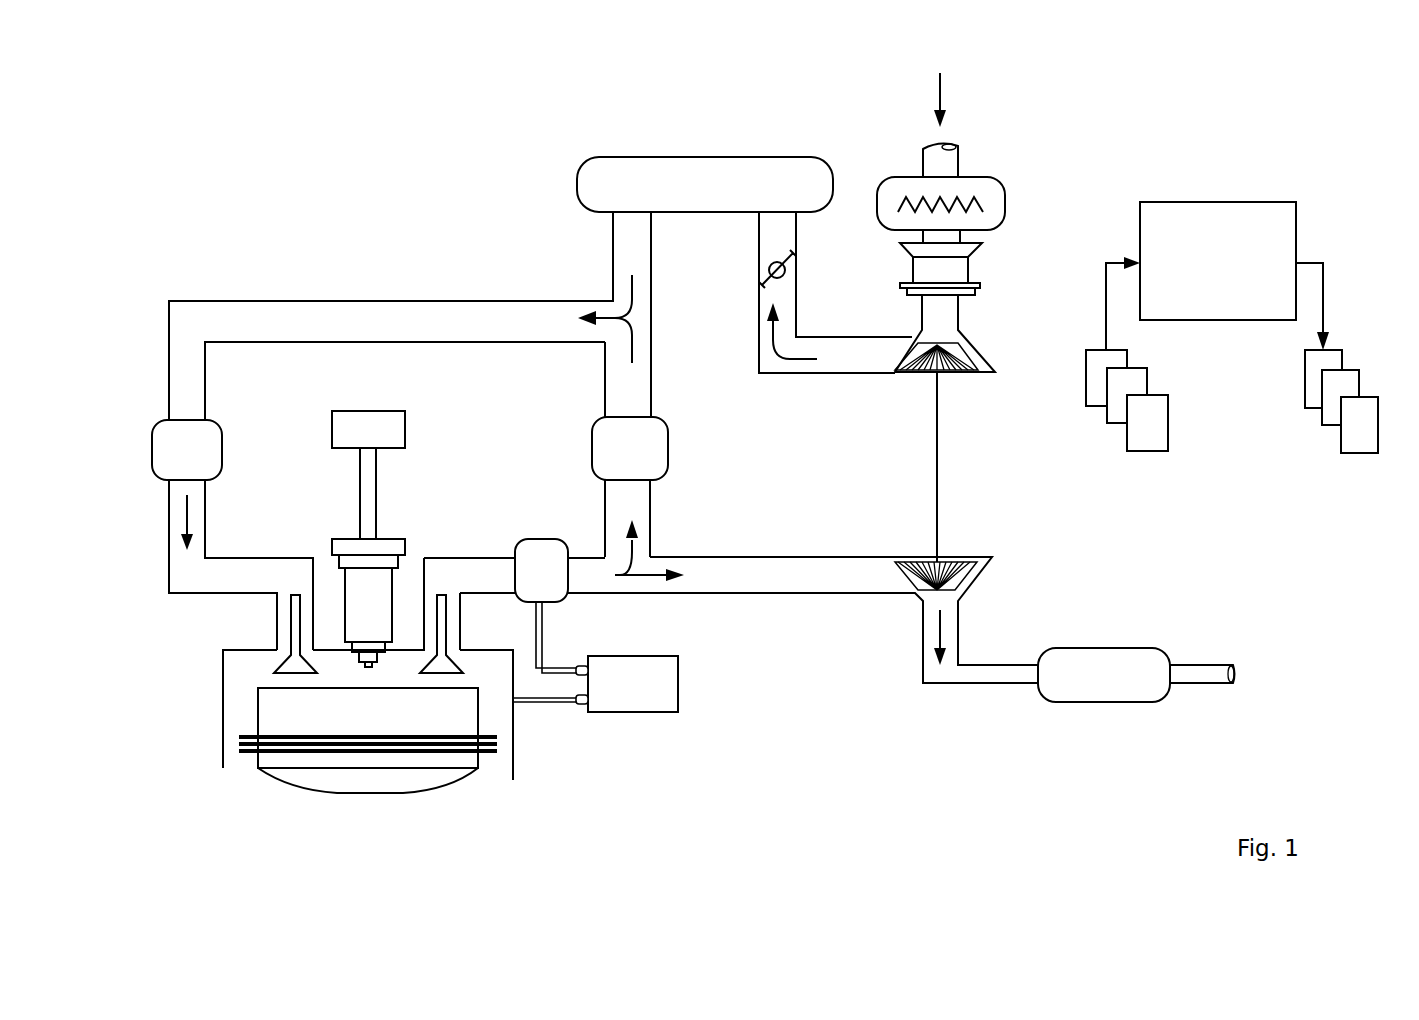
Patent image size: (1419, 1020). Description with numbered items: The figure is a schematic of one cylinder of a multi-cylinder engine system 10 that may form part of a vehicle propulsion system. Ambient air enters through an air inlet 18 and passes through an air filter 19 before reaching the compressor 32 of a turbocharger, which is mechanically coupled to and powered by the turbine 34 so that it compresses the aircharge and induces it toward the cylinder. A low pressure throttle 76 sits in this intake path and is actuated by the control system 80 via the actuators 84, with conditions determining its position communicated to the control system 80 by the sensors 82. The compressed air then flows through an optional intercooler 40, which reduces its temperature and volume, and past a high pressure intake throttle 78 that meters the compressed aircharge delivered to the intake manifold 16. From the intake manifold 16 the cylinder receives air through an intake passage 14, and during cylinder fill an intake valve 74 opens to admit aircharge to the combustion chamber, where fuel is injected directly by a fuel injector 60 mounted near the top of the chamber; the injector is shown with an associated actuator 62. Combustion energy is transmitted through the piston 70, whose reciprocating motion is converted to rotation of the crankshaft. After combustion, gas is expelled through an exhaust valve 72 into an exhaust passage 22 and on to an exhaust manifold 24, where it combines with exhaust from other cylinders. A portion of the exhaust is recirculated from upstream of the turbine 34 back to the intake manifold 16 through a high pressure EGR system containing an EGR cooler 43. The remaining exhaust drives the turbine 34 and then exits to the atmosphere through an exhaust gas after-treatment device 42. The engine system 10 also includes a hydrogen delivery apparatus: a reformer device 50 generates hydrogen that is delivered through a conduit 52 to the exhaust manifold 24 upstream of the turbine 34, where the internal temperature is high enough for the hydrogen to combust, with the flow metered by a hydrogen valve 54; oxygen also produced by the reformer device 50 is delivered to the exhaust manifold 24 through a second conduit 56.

The engine system 10 is at (308, 198).
The intake passage 14 is at (169, 520).
The intake manifold 16 is at (150, 446).
The air inlet 18 is at (921, 148).
The air filter 19 is at (985, 176).
The exhaust passage 22 is at (450, 556).
The exhaust manifold 24 is at (528, 582).
The compressor 32 is at (968, 358).
The turbine 34 is at (963, 558).
The intercooler 40 is at (692, 195).
The exhaust gas after-treatment device 42 is at (1091, 687).
The EGR cooler 43 is at (617, 460).
The reformer device 50 is at (618, 695).
The conduit 52 is at (543, 648).
The hydrogen valve 54 is at (581, 697).
The conduit 56 is at (525, 703).
The fuel injector 60 is at (350, 538).
The fuel injector actuator 62 is at (359, 411).
The piston 70 is at (313, 772).
The exhaust valve 72 is at (462, 651).
The intake valve 74 is at (284, 654).
The low pressure throttle 76 is at (979, 283).
The high pressure intake throttle 78 is at (760, 272).
The control system 80 is at (1205, 303).
The sensors 82 is at (1137, 389).
The actuators 84 is at (1349, 392).